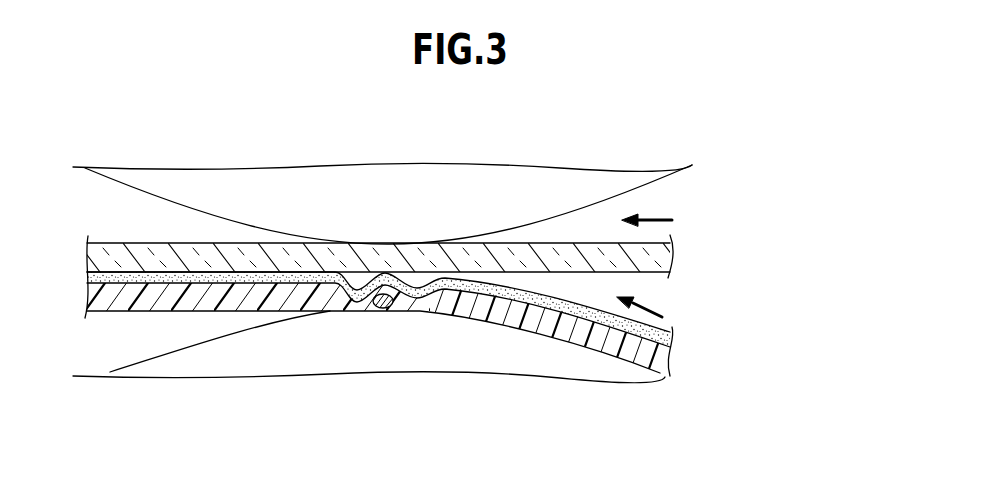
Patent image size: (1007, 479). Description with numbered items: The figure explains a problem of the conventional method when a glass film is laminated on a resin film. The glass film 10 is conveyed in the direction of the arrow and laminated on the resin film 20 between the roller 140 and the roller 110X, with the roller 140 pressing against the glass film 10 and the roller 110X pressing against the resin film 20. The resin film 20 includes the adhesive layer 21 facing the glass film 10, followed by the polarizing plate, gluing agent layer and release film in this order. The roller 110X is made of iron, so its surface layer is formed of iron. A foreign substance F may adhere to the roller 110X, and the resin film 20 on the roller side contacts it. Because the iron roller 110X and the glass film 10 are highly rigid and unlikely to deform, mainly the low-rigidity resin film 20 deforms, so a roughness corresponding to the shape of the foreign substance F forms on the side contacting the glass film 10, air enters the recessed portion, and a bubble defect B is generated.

The glass film 10 is at (655, 260).
The resin film 20 is at (458, 332).
The adhesive layer 21 is at (672, 345).
The roller 140 is at (468, 185).
The roller 110X is at (287, 352).
The bubble defect B is at (413, 272).
The foreign substance F is at (385, 308).